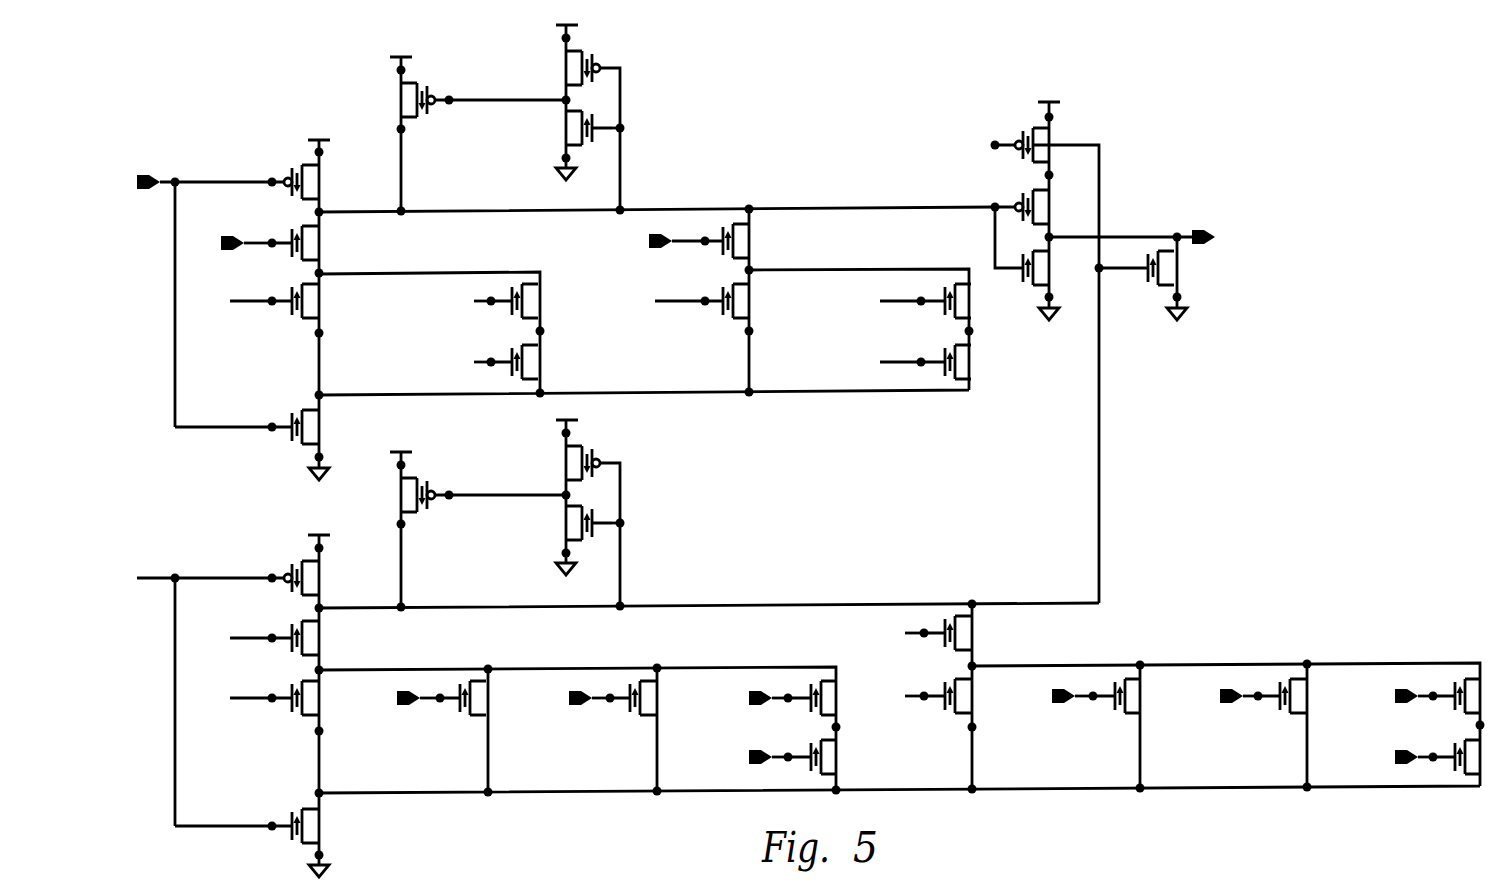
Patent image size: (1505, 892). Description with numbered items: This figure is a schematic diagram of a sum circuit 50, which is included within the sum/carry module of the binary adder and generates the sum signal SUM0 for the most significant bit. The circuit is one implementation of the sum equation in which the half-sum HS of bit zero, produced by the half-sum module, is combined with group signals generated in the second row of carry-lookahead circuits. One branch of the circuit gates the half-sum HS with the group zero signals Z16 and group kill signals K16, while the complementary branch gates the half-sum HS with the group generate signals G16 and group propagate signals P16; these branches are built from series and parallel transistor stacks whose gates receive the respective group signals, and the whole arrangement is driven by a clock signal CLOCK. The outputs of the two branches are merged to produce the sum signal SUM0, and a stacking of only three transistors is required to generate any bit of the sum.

The sum circuit 50 is at (811, 451).
The clock signal CLOCK is at (227, 496).
The half-sum signal HS is at (247, 208).
The group generate signals G16 is at (507, 494).
The group propagate signals P16 is at (608, 529).
The group zero signals Z16 is at (1027, 504).
The group kill signals K16 is at (1130, 529).
The sum signal SUM(0) SUM0 is at (1179, 273).